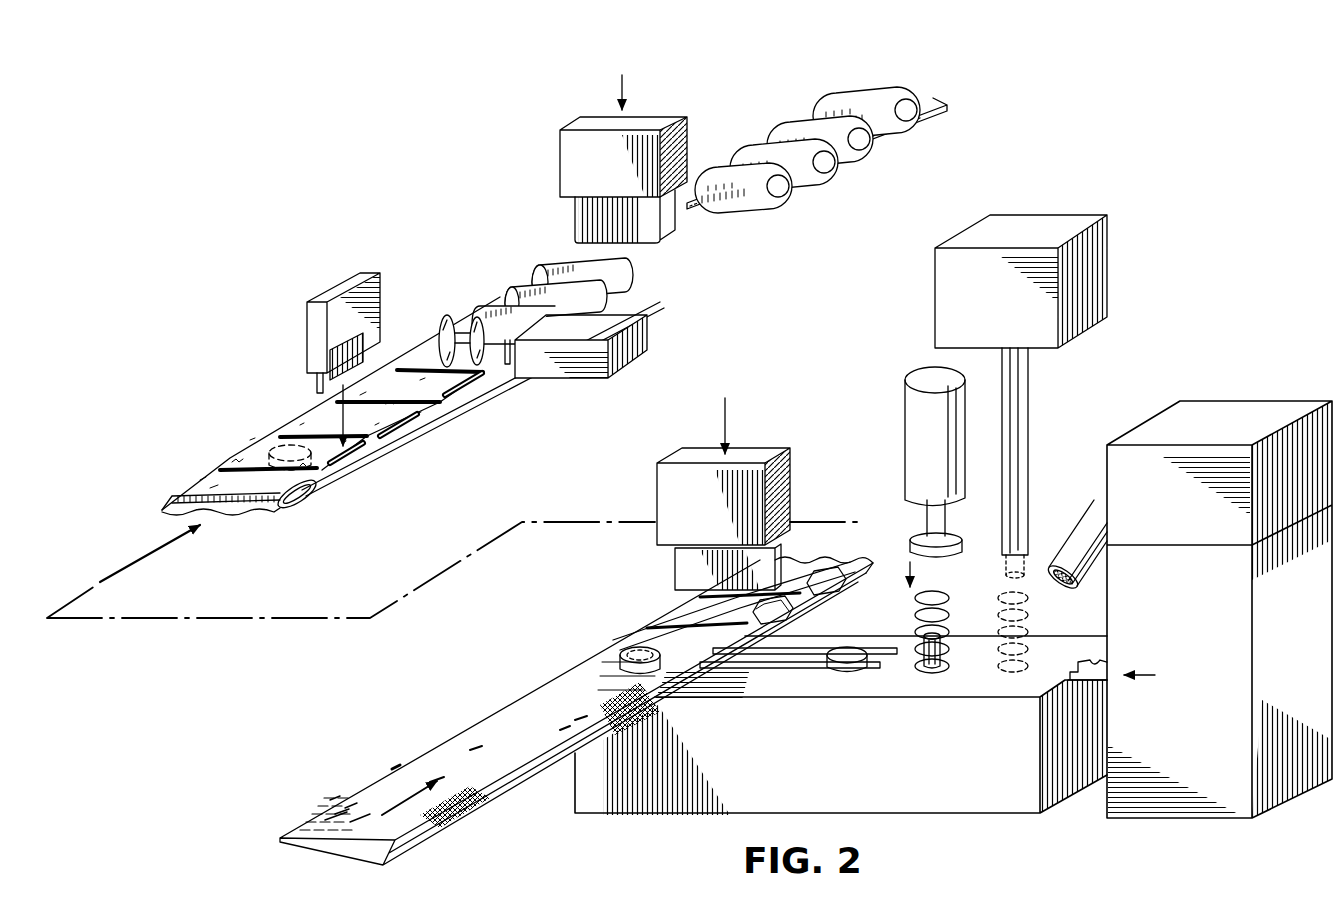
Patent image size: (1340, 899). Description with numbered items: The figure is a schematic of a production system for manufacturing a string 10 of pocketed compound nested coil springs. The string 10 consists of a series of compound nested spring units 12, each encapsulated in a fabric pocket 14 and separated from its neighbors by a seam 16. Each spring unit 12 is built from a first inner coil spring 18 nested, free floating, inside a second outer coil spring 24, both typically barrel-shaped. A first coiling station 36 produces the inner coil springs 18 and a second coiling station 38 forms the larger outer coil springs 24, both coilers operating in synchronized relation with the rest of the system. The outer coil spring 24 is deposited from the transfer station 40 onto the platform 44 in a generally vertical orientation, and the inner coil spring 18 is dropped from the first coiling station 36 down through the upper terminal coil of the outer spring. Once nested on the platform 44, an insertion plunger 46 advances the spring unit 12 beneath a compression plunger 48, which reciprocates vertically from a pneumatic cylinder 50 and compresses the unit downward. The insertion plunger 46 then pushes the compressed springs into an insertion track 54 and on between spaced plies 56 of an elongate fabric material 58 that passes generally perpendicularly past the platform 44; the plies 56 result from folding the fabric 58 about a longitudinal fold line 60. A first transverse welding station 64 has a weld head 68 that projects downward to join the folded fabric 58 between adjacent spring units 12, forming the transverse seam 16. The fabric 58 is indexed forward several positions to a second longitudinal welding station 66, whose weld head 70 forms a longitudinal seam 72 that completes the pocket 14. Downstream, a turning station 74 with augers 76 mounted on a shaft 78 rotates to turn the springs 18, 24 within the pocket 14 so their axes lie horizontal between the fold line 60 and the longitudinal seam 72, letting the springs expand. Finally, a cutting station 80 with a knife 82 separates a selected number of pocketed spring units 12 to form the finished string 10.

The string 10 is at (884, 88).
The compound nested spring unit 12 is at (801, 123).
The fabric pocket 14 is at (748, 145).
The seam 16 is at (389, 402).
The first inner coil spring 18 is at (1028, 554).
The second outer coil spring 24 is at (1000, 606).
The first coiling station 36 is at (1107, 250).
The second coiling station 38 is at (1226, 405).
The transfer station 40 is at (1083, 578).
The platform 44 is at (806, 793).
The insertion plunger 46 is at (1088, 662).
The compression plunger 48 is at (910, 541).
The pneumatic cylinder 50 is at (908, 419).
The insertion track 54 is at (783, 661).
The plies 56 is at (447, 755).
The fabric material 58 is at (394, 765).
The longitudinal fold line 60 is at (337, 803).
The first transverse welding station 64 is at (660, 501).
The second longitudinal welding station 66 is at (308, 316).
The weld head 68 is at (678, 570).
The weld head 70 is at (316, 383).
The longitudinal seam 72 is at (458, 394).
The turning station 74 is at (652, 356).
The augers 76 is at (462, 308).
The shaft 78 is at (509, 366).
The cutting station 80 is at (568, 146).
The knife 82 is at (578, 221).